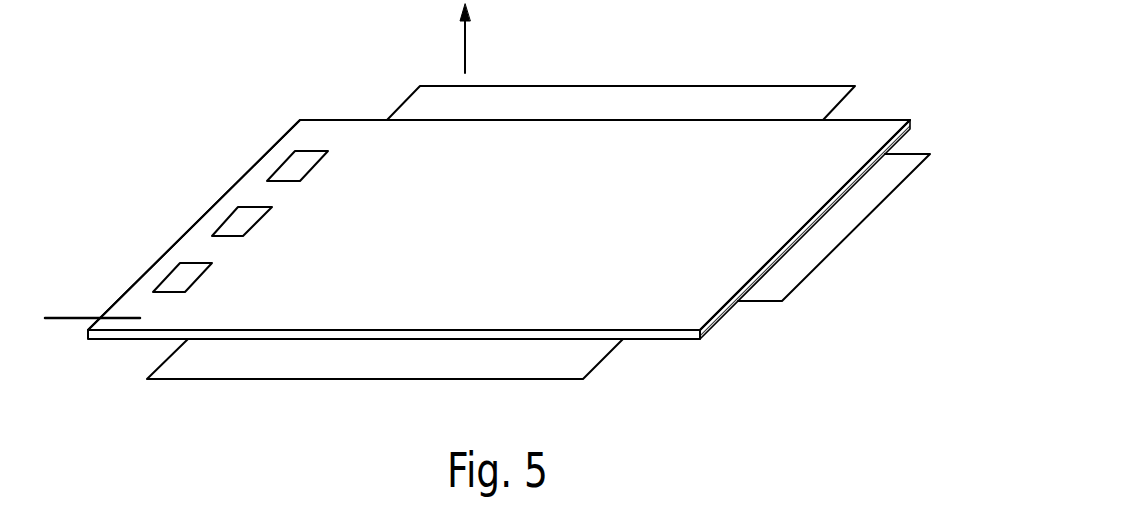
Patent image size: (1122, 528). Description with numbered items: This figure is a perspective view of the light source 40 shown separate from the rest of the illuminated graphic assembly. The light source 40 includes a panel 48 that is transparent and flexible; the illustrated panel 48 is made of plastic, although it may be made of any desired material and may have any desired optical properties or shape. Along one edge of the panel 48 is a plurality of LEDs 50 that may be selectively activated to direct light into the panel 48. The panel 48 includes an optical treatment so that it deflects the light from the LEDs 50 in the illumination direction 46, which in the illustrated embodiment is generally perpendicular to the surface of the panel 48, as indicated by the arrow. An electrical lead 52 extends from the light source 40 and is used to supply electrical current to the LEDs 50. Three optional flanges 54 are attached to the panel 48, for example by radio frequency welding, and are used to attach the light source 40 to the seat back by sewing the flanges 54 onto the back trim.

The light source 40 is at (862, 120).
The illumination direction 46 is at (465, 40).
The panel 48 is at (547, 243).
The LEDs 50 is at (272, 171).
The electrical lead 52 is at (72, 315).
The flanges 54 is at (688, 95).